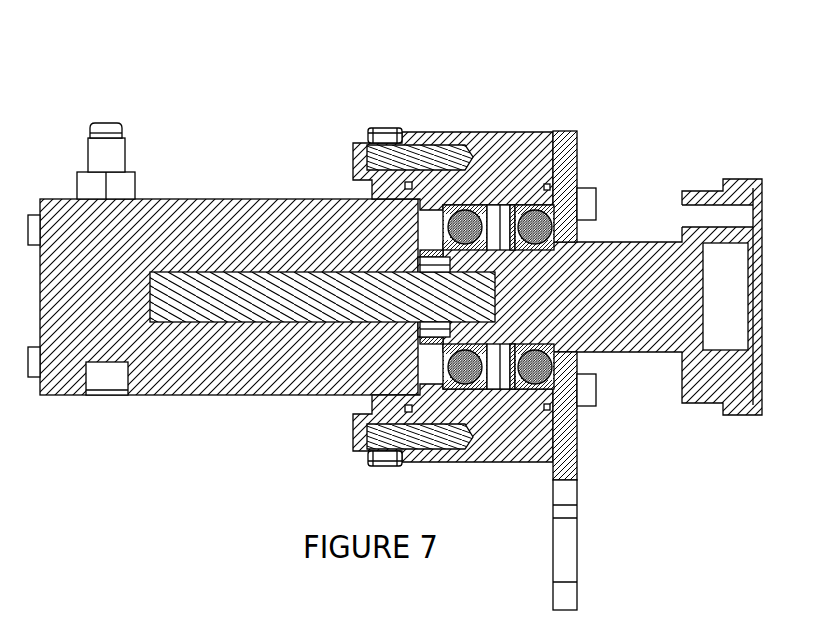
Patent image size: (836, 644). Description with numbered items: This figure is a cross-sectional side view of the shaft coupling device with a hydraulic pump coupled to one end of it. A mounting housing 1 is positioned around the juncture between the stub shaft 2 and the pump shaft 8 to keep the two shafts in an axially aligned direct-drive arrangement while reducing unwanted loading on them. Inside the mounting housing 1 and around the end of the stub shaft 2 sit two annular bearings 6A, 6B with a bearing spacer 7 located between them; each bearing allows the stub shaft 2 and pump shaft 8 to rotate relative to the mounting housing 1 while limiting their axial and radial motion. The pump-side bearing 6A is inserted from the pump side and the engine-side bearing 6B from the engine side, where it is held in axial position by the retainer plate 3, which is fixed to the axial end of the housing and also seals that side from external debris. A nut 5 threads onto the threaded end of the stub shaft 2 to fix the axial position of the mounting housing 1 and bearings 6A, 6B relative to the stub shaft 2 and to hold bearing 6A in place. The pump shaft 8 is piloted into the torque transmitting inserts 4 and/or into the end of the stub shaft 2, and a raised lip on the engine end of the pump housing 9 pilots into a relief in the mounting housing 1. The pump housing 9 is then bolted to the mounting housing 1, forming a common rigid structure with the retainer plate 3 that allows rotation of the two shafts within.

The mounting housing 1 is at (418, 130).
The stub shaft 2 is at (742, 176).
The retainer plate 3 is at (567, 129).
The torque transmitting inserts 4 is at (418, 237).
The nut 5 is at (406, 266).
The bearing 6A is at (471, 203).
The bearing 6B is at (539, 203).
The bearing spacer 7 is at (504, 232).
The pump shaft 8 is at (246, 270).
The pump housing 9 is at (196, 197).